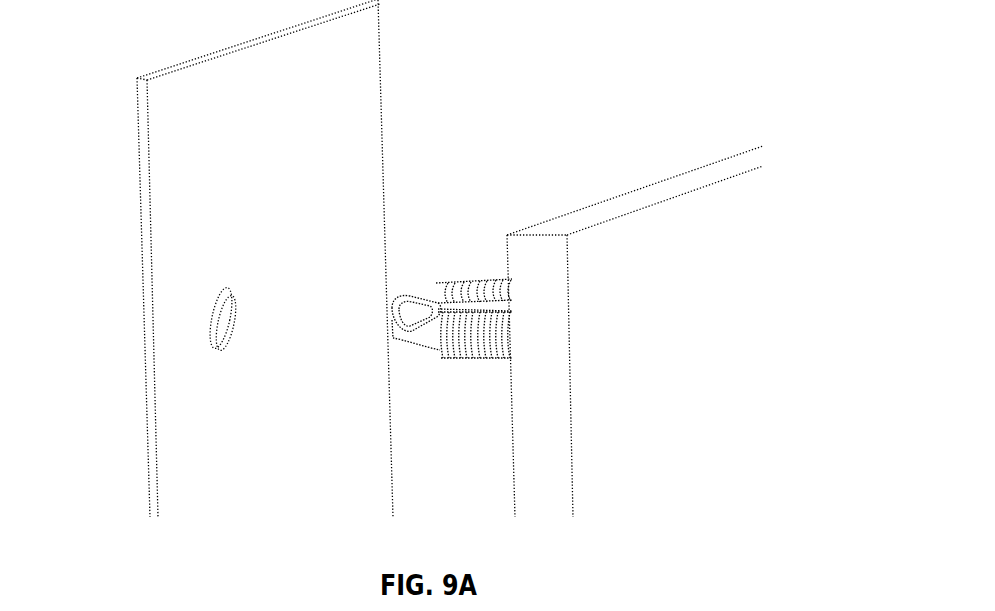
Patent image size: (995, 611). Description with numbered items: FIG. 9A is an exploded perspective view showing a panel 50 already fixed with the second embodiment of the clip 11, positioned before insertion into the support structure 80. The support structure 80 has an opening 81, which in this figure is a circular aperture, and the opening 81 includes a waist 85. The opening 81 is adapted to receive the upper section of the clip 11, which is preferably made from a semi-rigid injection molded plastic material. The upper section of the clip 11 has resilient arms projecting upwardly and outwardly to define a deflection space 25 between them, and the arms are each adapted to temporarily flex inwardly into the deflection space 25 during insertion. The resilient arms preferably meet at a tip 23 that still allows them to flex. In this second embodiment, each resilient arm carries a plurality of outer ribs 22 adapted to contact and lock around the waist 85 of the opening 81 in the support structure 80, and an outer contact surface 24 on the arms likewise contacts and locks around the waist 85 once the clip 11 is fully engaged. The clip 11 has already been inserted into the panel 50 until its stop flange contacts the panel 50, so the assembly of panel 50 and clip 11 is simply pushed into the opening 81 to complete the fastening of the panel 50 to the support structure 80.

The clip 11 is at (463, 334).
The outer ribs 22 is at (467, 278).
The tip 23 is at (393, 338).
The outer contact surface 24 is at (464, 350).
The deflection space 25 is at (430, 312).
The panel 50 is at (703, 182).
The support structure 80 is at (347, 172).
The opening 81 is at (217, 337).
The waist 85 is at (228, 296).